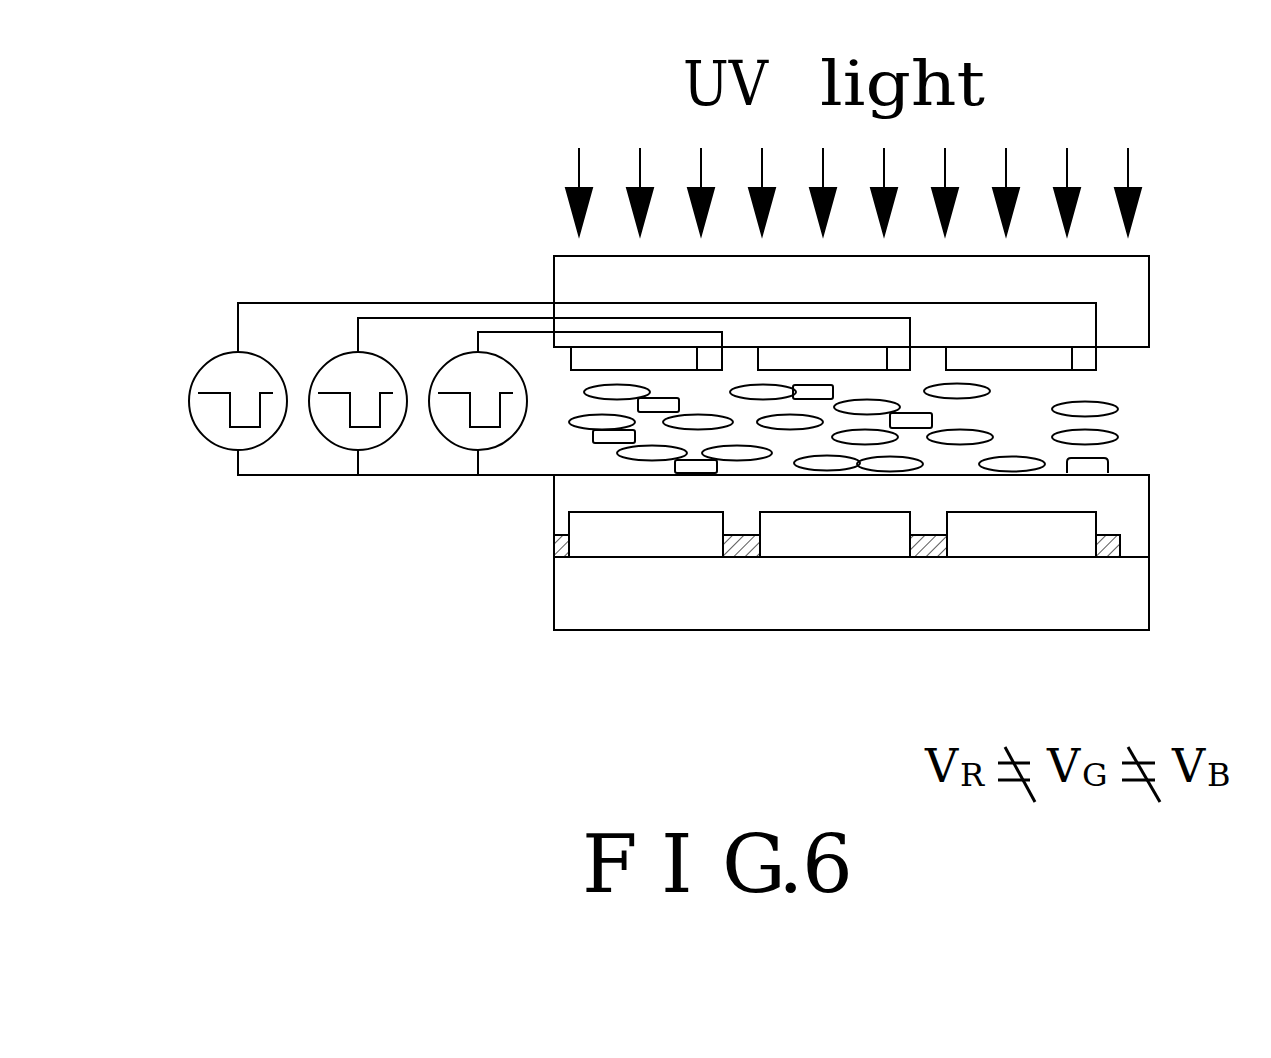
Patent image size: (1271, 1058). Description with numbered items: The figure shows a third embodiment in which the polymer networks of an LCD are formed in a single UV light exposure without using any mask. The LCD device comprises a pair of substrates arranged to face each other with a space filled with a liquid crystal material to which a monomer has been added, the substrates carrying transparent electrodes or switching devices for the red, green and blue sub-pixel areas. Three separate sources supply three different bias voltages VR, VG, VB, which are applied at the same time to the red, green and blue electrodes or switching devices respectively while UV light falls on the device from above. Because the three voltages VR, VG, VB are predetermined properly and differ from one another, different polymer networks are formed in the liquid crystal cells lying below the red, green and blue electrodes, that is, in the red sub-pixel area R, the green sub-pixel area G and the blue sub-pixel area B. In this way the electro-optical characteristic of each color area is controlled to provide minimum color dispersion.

The red bias voltage VR is at (238, 447).
The green bias voltage VG is at (358, 447).
The blue bias voltage VB is at (478, 447).
The red sub-pixel area R is at (646, 569).
The green sub-pixel area G is at (835, 569).
The blue sub-pixel area B is at (1021, 569).